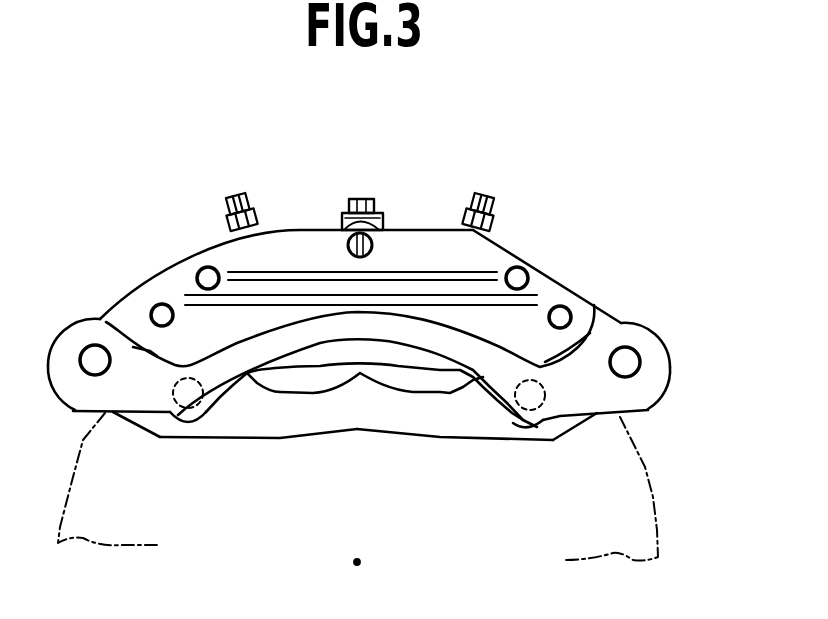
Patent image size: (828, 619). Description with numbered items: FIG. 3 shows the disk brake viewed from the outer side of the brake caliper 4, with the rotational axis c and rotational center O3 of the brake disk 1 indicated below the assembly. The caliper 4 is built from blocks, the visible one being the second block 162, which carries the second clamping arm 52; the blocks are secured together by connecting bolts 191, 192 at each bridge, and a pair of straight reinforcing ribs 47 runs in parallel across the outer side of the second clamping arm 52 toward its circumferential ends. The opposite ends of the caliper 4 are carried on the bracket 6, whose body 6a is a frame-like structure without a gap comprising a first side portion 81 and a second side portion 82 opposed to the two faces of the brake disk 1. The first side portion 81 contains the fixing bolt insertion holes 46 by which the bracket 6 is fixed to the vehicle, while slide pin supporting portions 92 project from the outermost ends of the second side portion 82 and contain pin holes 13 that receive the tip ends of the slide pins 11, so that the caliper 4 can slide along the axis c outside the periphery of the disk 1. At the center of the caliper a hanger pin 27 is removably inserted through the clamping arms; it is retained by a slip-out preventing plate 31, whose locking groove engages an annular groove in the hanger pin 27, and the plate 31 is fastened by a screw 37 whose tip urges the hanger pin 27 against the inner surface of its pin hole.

The brake disk 1 is at (657, 498).
The brake caliper 4 is at (513, 233).
The bracket 6 is at (278, 441).
The body of the bracket 6a is at (442, 437).
The slide pin 11 is at (89, 338).
The pin hole 13 is at (104, 365).
The hanger pin 27 is at (346, 247).
The slip-out preventing plate 31 is at (391, 211).
The screw 37 is at (360, 196).
The fixing bolt insertion hole 46 is at (184, 405).
The reinforcing ribs 47 is at (428, 302).
The second clamping arm 52 is at (417, 240).
The first side portion 81 is at (343, 433).
The second side portion 82 is at (245, 328).
The slide pin supporting portions 92 is at (657, 428).
The second block 162 is at (283, 227).
The connecting bolt 191 is at (588, 279).
The connecting bolt 192 is at (550, 243).
The rotational axis c is at (357, 562).
The rotational center O3 is at (357, 562).